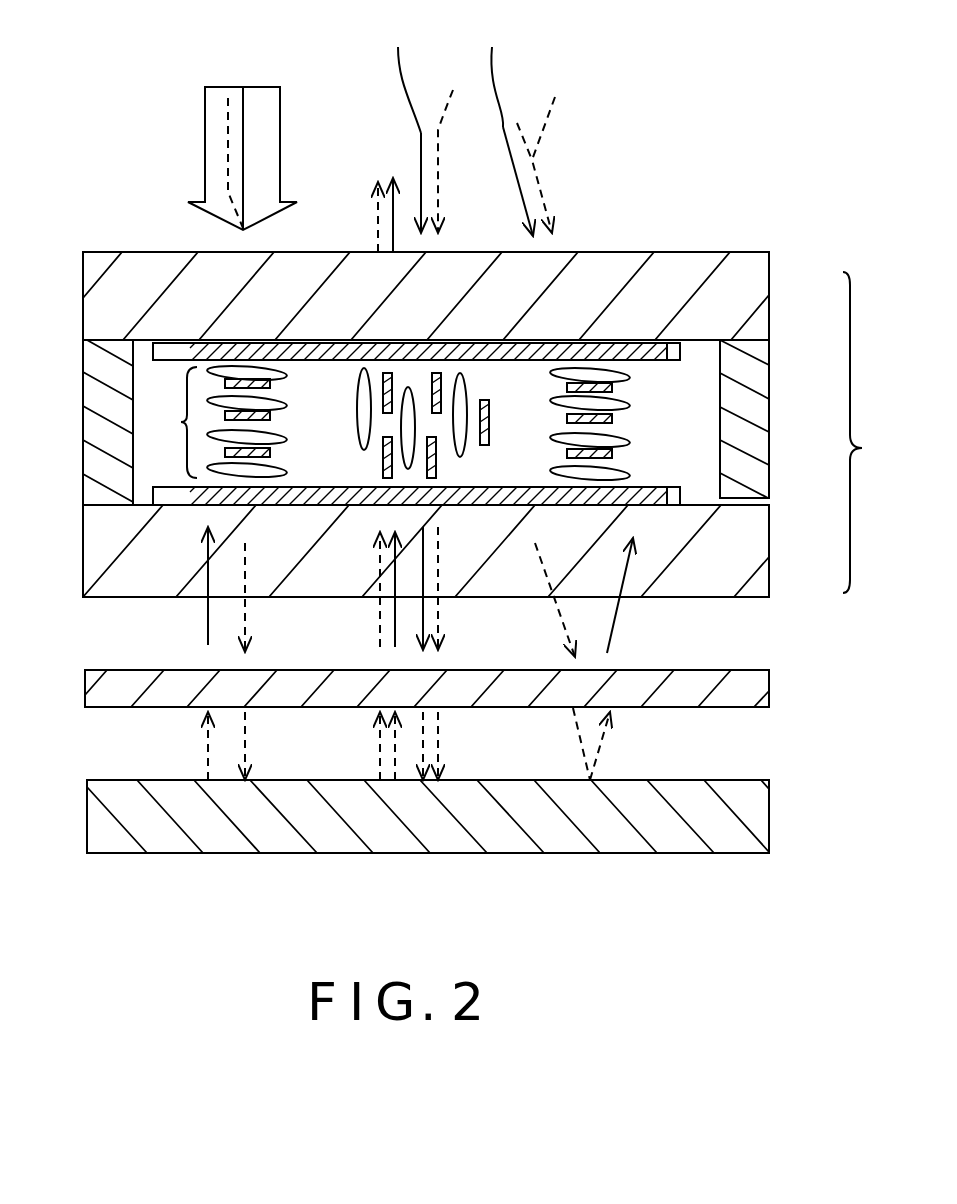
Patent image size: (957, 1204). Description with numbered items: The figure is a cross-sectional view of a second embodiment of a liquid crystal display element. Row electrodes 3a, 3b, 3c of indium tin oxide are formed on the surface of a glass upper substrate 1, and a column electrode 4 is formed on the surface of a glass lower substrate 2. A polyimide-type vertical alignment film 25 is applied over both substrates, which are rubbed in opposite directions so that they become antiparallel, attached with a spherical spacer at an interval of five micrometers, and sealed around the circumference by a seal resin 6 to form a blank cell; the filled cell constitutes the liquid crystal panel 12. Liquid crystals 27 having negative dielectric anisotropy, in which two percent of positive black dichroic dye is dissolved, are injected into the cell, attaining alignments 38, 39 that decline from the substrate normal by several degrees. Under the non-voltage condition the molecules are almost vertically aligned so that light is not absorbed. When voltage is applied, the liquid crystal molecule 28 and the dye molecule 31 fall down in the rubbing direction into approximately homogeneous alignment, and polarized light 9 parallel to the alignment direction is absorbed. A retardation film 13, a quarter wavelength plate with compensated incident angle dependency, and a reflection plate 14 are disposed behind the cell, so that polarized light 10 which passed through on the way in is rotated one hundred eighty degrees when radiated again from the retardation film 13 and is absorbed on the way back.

The upper substrate 1 is at (737, 307).
The lower substrate 2 is at (737, 555).
The row electrode 3a is at (197, 343).
The row electrode 3b is at (497, 353).
The row electrode 3c is at (640, 343).
The column electrode 4 is at (743, 500).
The seal resin 6 is at (103, 403).
The polarized light 9 is at (280, 107).
The polarized light 10 is at (243, 228).
The liquid crystal panel 12 is at (877, 432).
The retardation film 13 is at (742, 690).
The reflection plate 14 is at (740, 818).
The alignment film 25 is at (683, 343).
The liquid crystals 27 is at (211, 422).
The liquid crystal molecule 28 is at (282, 343).
The dye molecule 31 is at (233, 352).
The alignment 38 is at (461, 457).
The alignment 39 is at (489, 408).